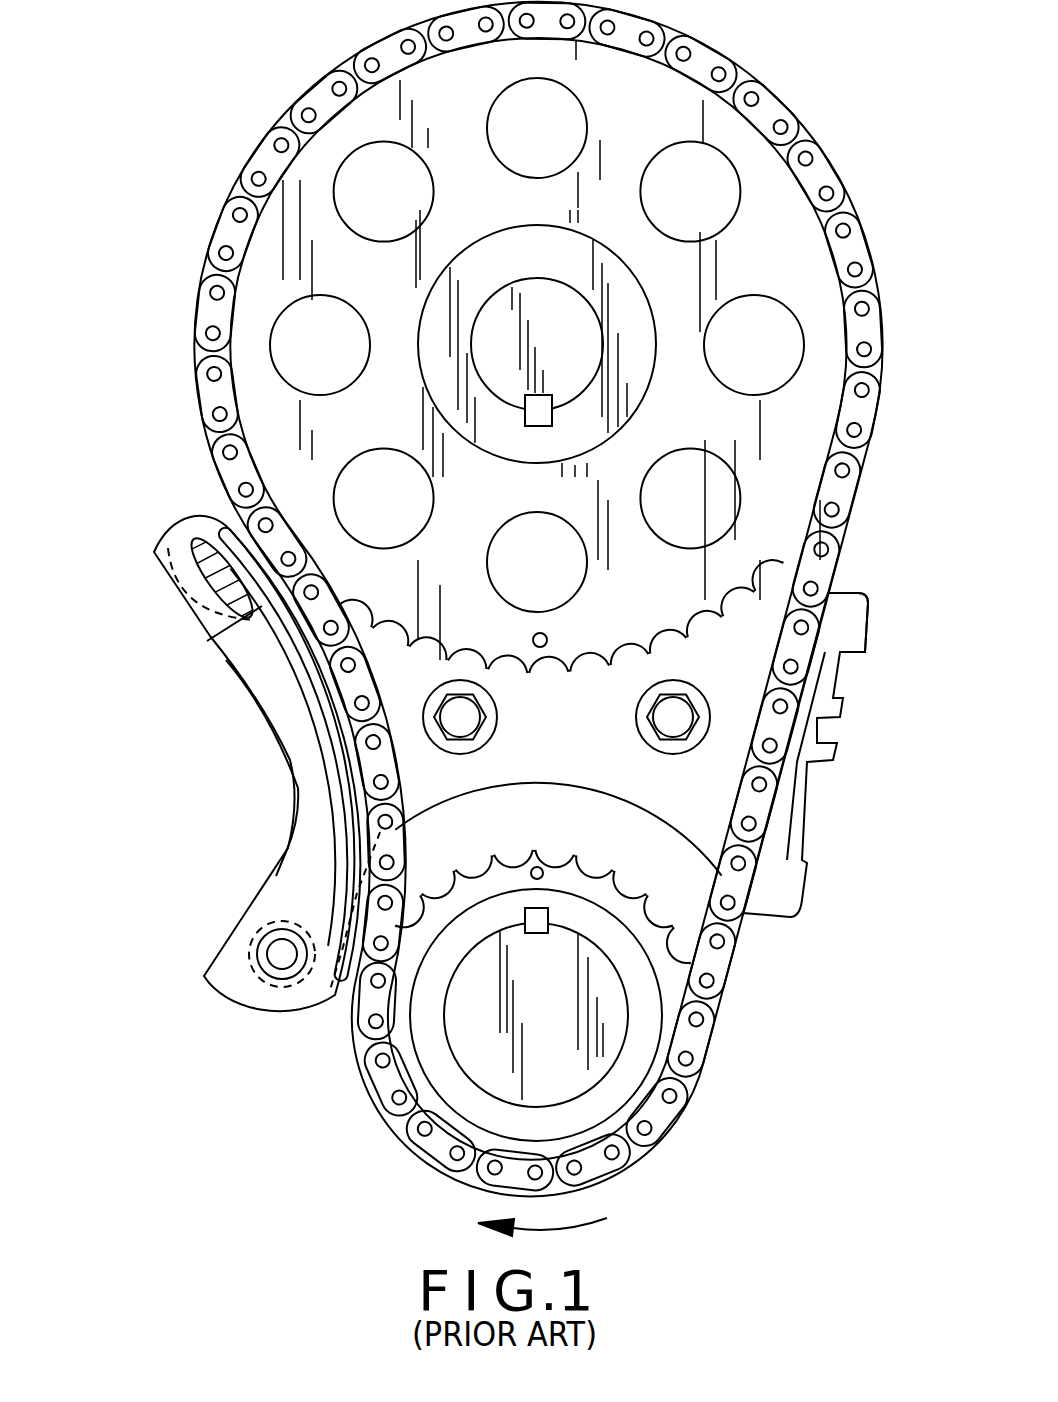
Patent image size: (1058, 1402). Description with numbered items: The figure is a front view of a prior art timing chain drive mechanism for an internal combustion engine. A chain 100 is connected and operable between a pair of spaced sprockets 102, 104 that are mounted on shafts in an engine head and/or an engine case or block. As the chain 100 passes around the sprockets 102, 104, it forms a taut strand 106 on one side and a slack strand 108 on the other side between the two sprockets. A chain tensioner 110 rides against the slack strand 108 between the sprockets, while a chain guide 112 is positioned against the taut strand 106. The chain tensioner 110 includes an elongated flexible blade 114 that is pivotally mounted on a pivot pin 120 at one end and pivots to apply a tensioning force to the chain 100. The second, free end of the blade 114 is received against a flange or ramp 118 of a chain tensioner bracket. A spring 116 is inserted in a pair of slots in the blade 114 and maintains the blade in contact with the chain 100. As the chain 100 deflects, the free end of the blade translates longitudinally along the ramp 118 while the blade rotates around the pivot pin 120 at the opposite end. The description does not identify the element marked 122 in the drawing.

The chain 100 is at (500, 599).
The sprocket 102 is at (755, 160).
The sprocket 104 is at (673, 967).
The taut strand 106 is at (838, 737).
The slack strand 108 is at (240, 467).
The chain tensioner 110 is at (239, 796).
The chain guide 112 is at (850, 618).
The elongated flexible blade 114 is at (239, 796).
The spring 116 is at (345, 862).
The flange or ramp 118 is at (183, 598).
The pivot pin 120 is at (280, 958).
The arm body 122 is at (215, 594).